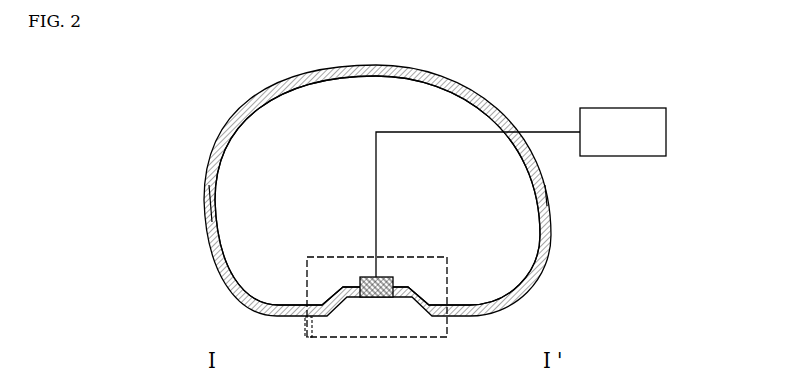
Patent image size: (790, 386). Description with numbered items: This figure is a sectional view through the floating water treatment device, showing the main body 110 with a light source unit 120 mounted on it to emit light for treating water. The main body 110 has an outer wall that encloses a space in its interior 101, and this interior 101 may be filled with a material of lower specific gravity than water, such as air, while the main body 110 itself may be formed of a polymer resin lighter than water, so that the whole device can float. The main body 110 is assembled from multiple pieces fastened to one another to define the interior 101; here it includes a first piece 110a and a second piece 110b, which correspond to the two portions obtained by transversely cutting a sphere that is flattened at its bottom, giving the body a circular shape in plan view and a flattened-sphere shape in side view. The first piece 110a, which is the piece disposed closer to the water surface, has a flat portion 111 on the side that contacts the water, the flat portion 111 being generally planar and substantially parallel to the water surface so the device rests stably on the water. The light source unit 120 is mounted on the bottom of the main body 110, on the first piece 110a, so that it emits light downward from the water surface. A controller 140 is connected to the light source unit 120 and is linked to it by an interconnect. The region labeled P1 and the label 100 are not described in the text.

The light emitting device 100 is at (482, 131).
The interior 101 is at (485, 239).
The main body 110 is at (94, 157).
The first piece 110a is at (207, 233).
The second piece 110b is at (207, 163).
The flat portion 111 is at (308, 335).
The light source unit 120 is at (368, 298).
The controller 140 is at (646, 108).
The mounting region P1 is at (428, 337).